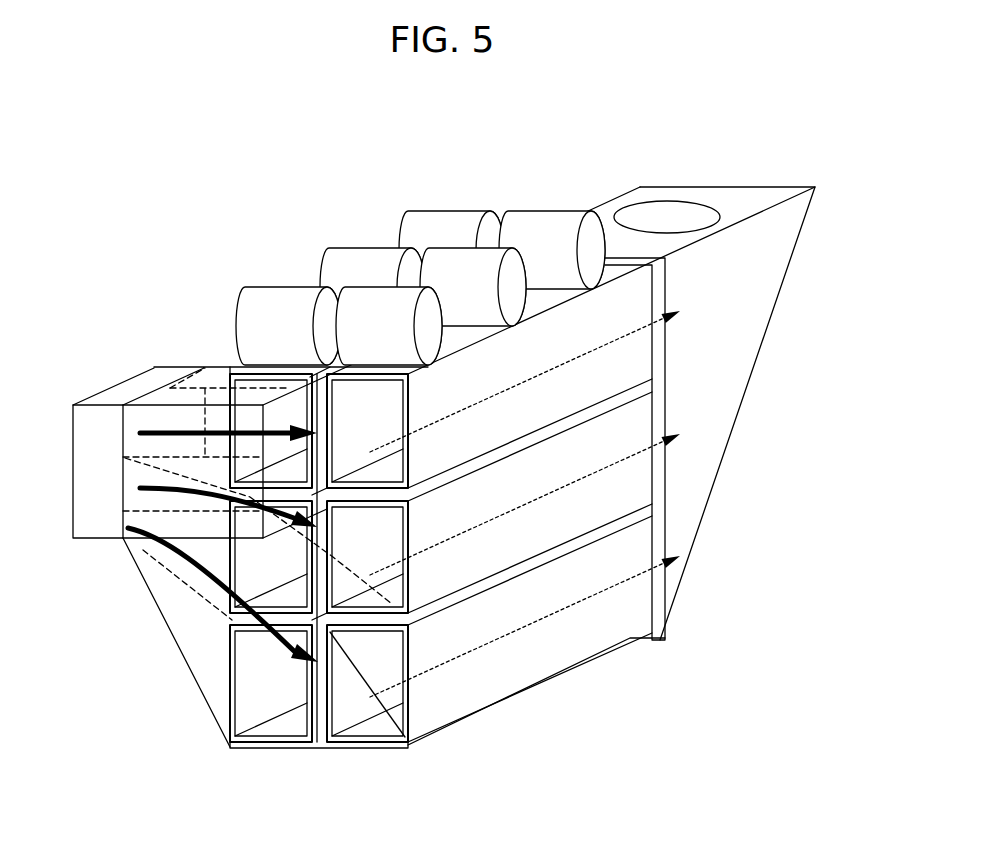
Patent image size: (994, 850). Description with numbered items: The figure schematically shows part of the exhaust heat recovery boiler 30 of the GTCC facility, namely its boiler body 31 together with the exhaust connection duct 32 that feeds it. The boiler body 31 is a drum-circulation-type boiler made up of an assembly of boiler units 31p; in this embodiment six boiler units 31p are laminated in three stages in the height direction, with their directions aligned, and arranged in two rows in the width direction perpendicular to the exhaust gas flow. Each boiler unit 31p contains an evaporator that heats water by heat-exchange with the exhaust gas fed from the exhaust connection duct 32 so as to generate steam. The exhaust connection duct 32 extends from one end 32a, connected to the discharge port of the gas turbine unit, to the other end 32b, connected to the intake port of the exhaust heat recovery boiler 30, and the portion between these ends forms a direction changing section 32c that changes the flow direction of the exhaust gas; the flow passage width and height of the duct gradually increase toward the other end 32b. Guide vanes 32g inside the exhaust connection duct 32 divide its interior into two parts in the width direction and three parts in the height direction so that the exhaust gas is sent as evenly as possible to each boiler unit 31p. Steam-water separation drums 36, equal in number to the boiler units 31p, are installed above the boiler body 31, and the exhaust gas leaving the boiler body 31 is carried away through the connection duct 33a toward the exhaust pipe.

The exhaust heat recovery boiler 30 is at (592, 652).
The boiler body 31 is at (507, 692).
The boiler unit 31p is at (243, 383).
The exhaust connection duct 32 is at (208, 677).
The one end 32a is at (88, 406).
The other end 32b is at (382, 750).
The direction changing section 32c is at (270, 673).
The guide vanes 32g is at (192, 380).
The connection duct 33a is at (762, 287).
The steam-water separation drum 36 is at (357, 292).